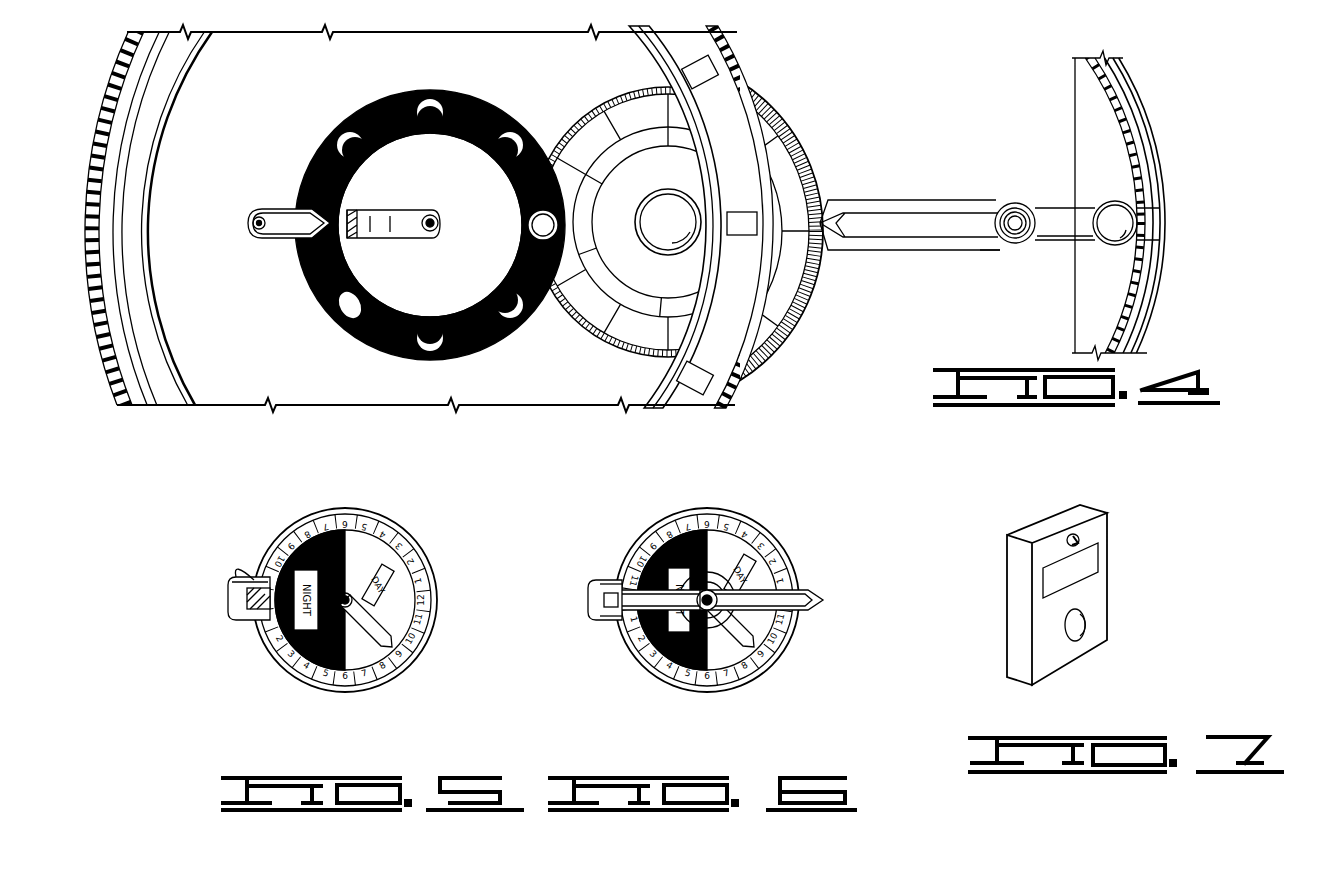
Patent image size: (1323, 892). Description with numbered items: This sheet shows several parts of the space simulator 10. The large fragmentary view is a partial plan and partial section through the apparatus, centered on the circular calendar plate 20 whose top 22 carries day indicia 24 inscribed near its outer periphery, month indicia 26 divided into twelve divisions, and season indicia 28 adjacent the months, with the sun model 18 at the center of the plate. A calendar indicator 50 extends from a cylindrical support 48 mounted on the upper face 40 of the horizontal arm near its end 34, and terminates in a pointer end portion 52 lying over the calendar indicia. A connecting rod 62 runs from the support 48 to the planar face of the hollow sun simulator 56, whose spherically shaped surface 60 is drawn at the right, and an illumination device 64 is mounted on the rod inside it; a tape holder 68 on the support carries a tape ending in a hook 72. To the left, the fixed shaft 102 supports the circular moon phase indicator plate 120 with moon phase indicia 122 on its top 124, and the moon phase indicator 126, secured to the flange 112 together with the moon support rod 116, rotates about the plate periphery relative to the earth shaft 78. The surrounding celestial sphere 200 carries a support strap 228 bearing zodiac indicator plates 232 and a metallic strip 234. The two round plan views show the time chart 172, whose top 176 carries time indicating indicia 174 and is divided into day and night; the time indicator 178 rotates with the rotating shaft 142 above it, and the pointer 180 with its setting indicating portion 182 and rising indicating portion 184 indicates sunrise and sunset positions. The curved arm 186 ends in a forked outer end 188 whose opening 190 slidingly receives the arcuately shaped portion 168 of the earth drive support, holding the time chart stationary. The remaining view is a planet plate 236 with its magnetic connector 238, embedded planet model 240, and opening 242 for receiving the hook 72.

In FIG. 4, the space simulator 10 is at (780, 92).
In FIG. 4, the sun model 18 is at (690, 200).
In FIG. 4, the calendar plate 20 is at (665, 231).
In FIG. 4, the top 22 is at (790, 312).
In FIG. 4, the day indicia 24 is at (808, 152).
In FIG. 4, the month indicia 26 is at (805, 278).
In FIG. 4, the season indicia 28 is at (630, 300).
In FIG. 4, the end 34 is at (1024, 208).
In FIG. 4, the upper face 40 is at (911, 232).
In FIG. 4, the support 48 is at (1002, 242).
In FIG. 4, the calendar indicator 50 is at (977, 237).
In FIG. 4, the pointer end portion 52 is at (833, 210).
In FIG. 4, the sun simulator 56 is at (1137, 112).
In FIG. 4, the spherically shaped surface 60 is at (1150, 317).
In FIG. 4, the connecting rod 62 is at (1070, 225).
In FIG. 4, the illumination device 64 is at (1122, 213).
In FIG. 4, the tape holder 68 is at (1023, 193).
In FIG. 4, the hook 72 is at (1000, 212).
In FIG. 4, the earth shaft 78 is at (404, 230).
In FIG. 5, the earth shaft 78 is at (347, 598).
In FIG. 6, the earth shaft 78 is at (730, 590).
In FIG. 4, the fixed shaft 102 is at (428, 212).
In FIG. 4, the flange 112 is at (266, 227).
In FIG. 4, the moon support rod 116 is at (250, 227).
In FIG. 4, the moon phase indicator plate 120 is at (430, 238).
In FIG. 4, the moon phase indicia 122 is at (443, 357).
In FIG. 4, the top 124 is at (380, 330).
In FIG. 4, the moon phase indicator 126 is at (275, 240).
In FIG. 5, the rotating shaft 142 is at (349, 608).
In FIG. 6, the rotating shaft 142 is at (715, 615).
In FIG. 5, the arcuately shaped portion 168 is at (245, 600).
In FIG. 5, the time chart 172 is at (413, 658).
In FIG. 6, the time chart 172 is at (797, 574).
In FIG. 5, the time indicating indicia 174 is at (400, 677).
In FIG. 6, the time indicating indicia 174 is at (650, 665).
In FIG. 5, the top 176 is at (428, 585).
In FIG. 6, the top 176 is at (715, 690).
In FIG. 5, the time indicator 178 is at (385, 635).
In FIG. 6, the time indicator 178 is at (757, 642).
In FIG. 6, the pointer 180 is at (715, 588).
In FIG. 6, the setting indicating portion 182 is at (607, 592).
In FIG. 6, the rising indicating portion 184 is at (820, 600).
In FIG. 5, the curved arm 186 is at (235, 618).
In FIG. 6, the curved arm 186 is at (597, 604).
In FIG. 5, the forked outer end 188 is at (236, 585).
In FIG. 6, the forked outer end 188 is at (618, 578).
In FIG. 5, the opening 190 is at (240, 575).
In FIG. 6, the opening 190 is at (618, 610).
In FIG. 4, the celestial sphere 200 is at (720, 219).
In FIG. 4, the support strap 228 is at (705, 303).
In FIG. 4, the zodiac indicator plates 232 is at (707, 62).
In FIG. 4, the strip 234 is at (130, 378).
In FIG. 7, the planet plate 236 is at (1065, 672).
In FIG. 7, the connector 238 is at (1088, 563).
In FIG. 7, the planet model 240 is at (1082, 620).
In FIG. 7, the opening 242 is at (1080, 540).